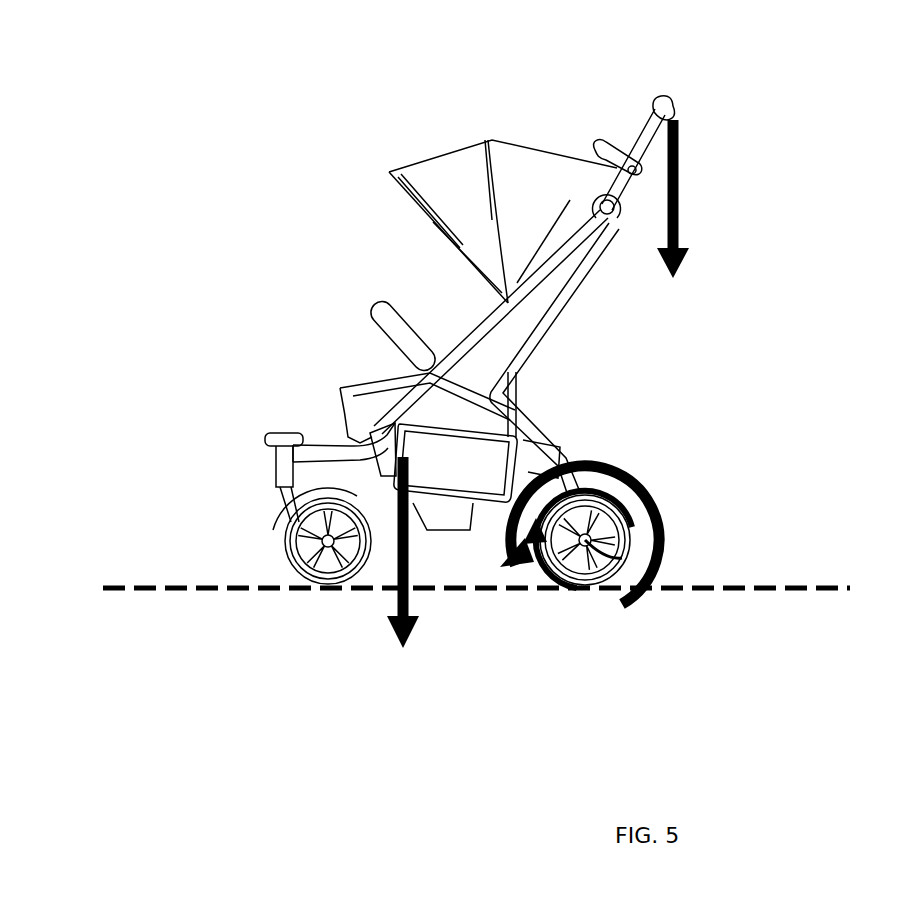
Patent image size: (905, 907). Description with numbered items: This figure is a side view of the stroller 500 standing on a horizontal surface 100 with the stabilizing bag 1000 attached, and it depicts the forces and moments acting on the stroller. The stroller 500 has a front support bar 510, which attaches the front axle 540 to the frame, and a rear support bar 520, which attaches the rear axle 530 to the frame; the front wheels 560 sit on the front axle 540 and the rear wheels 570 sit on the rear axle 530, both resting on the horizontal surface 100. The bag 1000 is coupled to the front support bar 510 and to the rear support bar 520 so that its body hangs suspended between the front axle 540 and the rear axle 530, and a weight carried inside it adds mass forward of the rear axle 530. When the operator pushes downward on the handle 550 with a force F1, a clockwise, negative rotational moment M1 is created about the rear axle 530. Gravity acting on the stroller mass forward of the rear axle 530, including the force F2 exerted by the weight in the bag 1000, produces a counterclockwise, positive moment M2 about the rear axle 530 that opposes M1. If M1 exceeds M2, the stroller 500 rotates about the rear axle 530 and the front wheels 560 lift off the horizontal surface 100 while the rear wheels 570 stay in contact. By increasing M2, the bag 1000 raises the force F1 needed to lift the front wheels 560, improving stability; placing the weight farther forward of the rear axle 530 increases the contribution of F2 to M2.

The horizontal surface 100 is at (113, 587).
The stroller 500 is at (480, 321).
The front support bar 510 is at (328, 443).
The rear support bar 520 is at (535, 422).
The rear axle 530 is at (660, 506).
The front axle 540 is at (327, 543).
The handle 550 is at (673, 107).
The front wheels 560 is at (285, 577).
The rear wheels 570 is at (643, 592).
The bag 1000 is at (468, 502).
The rotational moment M1 is at (559, 595).
The positive moment M2 is at (633, 477).
The force F1 is at (675, 215).
The force F2 is at (403, 570).